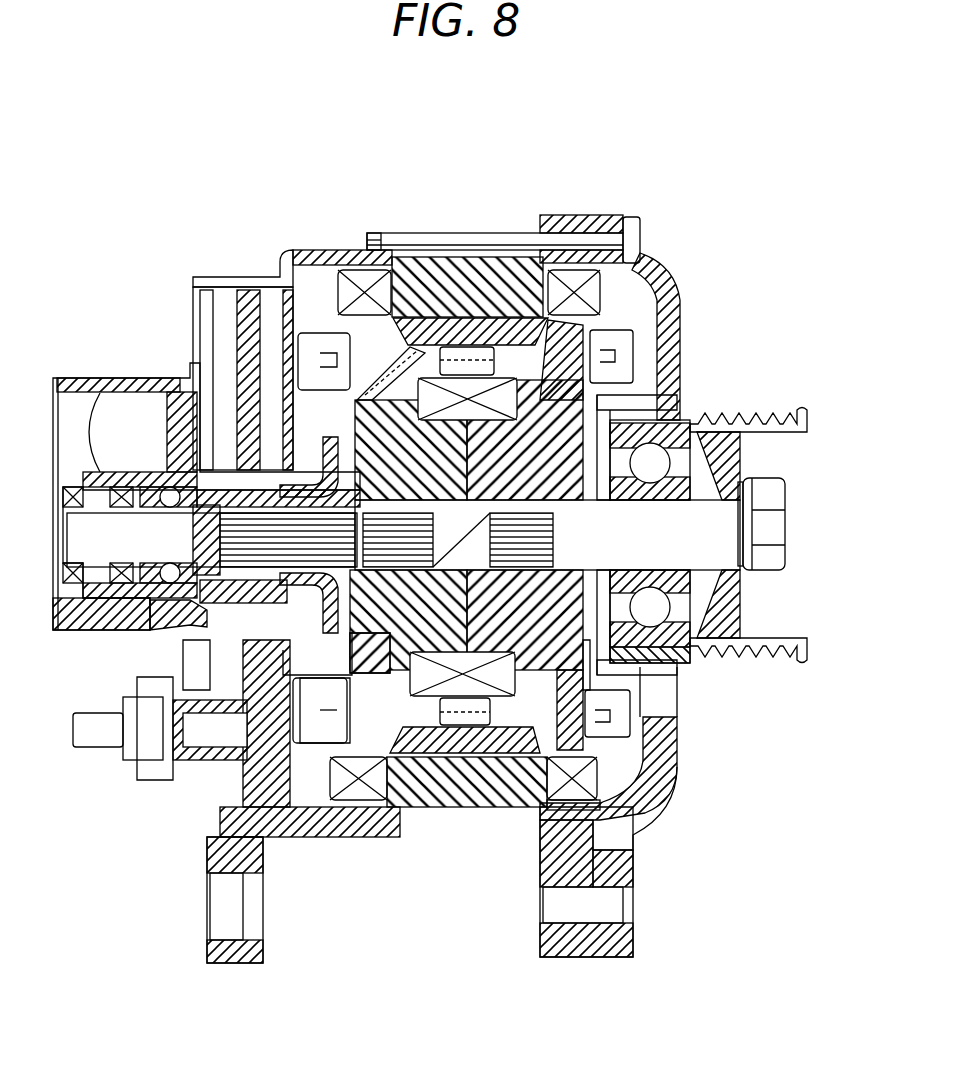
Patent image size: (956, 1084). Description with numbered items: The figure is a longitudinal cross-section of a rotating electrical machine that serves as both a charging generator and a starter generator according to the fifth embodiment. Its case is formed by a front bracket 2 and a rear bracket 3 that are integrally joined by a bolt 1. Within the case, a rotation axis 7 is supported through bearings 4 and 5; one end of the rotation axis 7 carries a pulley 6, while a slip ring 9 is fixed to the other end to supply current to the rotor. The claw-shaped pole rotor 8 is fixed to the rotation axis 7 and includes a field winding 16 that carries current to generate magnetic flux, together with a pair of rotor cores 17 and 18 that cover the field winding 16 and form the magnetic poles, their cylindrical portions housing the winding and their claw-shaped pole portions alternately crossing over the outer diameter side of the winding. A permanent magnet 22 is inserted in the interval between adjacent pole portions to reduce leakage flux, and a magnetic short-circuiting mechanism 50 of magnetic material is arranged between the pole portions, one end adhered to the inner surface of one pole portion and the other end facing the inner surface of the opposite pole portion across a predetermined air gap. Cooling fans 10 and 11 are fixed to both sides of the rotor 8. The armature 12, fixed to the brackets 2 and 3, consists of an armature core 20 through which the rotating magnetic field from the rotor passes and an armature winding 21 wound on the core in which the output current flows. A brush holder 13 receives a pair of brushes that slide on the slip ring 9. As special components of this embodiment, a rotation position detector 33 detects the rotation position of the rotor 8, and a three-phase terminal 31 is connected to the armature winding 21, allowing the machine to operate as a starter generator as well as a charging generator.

The bolt 1 is at (632, 220).
The front bracket 2 is at (665, 245).
The rear bracket 3 is at (340, 248).
The bearing 4 is at (697, 420).
The bearing 5 is at (147, 470).
The pulley 6 is at (747, 423).
The rotation axis 7 is at (723, 533).
The claw-shaped pole rotor 8 is at (587, 327).
The slip ring 9 is at (195, 634).
The cooling fan 10 is at (318, 330).
The cooling fan 11 is at (617, 350).
The armature 12 is at (443, 268).
The brush holder 13 is at (200, 300).
The field winding 16 is at (590, 668).
The rotor core 17 is at (337, 810).
The rotor core 18 is at (500, 812).
The armature core 20 is at (483, 257).
The armature winding 21 is at (385, 233).
The permanent magnet 22 is at (515, 340).
The three-phase terminal 31 is at (108, 727).
The rotation position detector 33 is at (90, 475).
The magnetic short-circuiting mechanism 50 is at (443, 810).